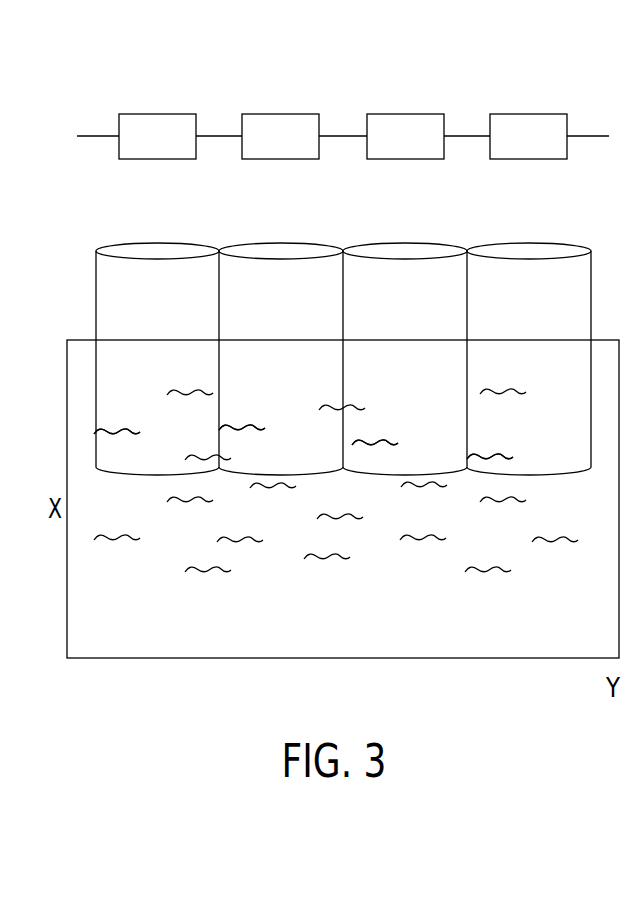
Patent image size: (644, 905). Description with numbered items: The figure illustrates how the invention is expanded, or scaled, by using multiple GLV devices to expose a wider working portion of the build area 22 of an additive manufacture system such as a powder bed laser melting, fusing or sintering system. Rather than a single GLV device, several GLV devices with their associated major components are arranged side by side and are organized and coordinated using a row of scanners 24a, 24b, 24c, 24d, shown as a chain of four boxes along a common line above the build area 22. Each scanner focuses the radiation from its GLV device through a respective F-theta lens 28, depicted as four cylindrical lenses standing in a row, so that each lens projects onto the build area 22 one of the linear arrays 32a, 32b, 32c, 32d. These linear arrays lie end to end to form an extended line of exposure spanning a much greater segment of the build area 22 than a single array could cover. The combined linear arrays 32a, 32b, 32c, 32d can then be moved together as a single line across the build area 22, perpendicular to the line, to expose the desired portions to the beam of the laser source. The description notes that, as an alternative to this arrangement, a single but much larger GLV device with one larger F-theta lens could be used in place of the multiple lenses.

The build area 22 is at (222, 642).
The scanner 24a is at (157, 114).
The scanner 24b is at (280, 114).
The scanner 24c is at (405, 114).
The scanner 24d is at (527, 114).
The F-theta lens 28 is at (157, 243).
The linear array 32a is at (157, 473).
The linear array 32b is at (282, 473).
The linear array 32c is at (405, 473).
The linear array 32d is at (528, 473).